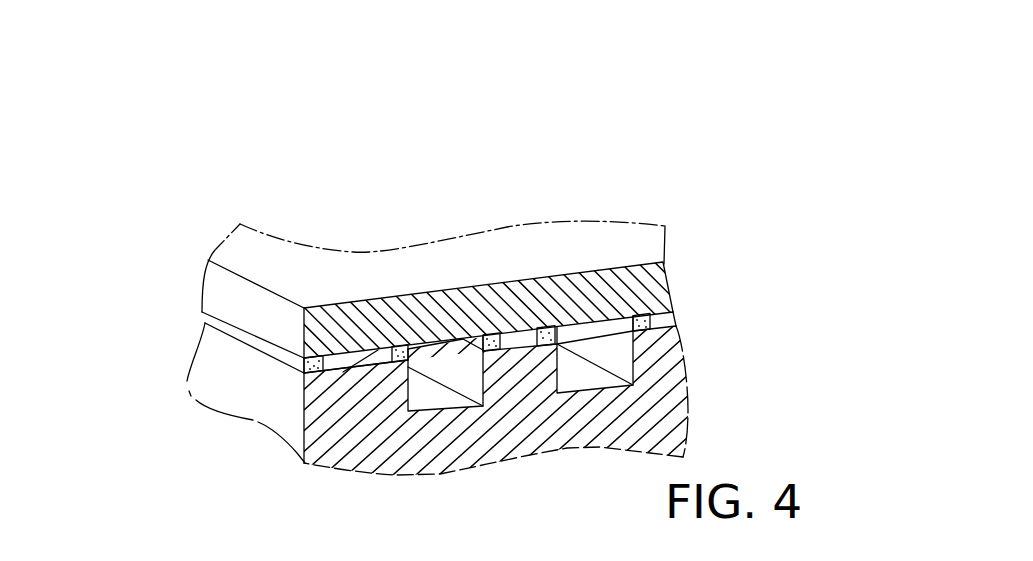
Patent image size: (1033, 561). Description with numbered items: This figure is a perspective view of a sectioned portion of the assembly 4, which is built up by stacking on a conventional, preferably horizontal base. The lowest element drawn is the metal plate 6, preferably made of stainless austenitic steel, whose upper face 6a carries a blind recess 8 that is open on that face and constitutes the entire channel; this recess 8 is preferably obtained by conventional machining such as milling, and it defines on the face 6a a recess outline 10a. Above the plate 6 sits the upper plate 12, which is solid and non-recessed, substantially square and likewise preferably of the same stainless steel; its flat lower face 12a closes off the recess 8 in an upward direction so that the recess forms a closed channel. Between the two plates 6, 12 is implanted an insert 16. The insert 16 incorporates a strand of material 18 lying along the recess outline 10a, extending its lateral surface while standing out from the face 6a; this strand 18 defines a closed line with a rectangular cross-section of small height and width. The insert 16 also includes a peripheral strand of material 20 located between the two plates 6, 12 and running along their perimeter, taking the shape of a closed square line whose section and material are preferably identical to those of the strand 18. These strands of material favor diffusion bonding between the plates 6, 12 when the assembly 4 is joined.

The assembly 4 is at (325, 185).
The metal plate 6 is at (685, 377).
The upper face 6a is at (362, 363).
The recess 8 is at (432, 396).
The recess outline 10a is at (418, 338).
The upper plate 12 is at (646, 290).
The flat lower face 12a is at (305, 400).
The insert 16 is at (204, 318).
The strand of material 18 is at (393, 358).
The peripheral strand of material 20 is at (243, 333).